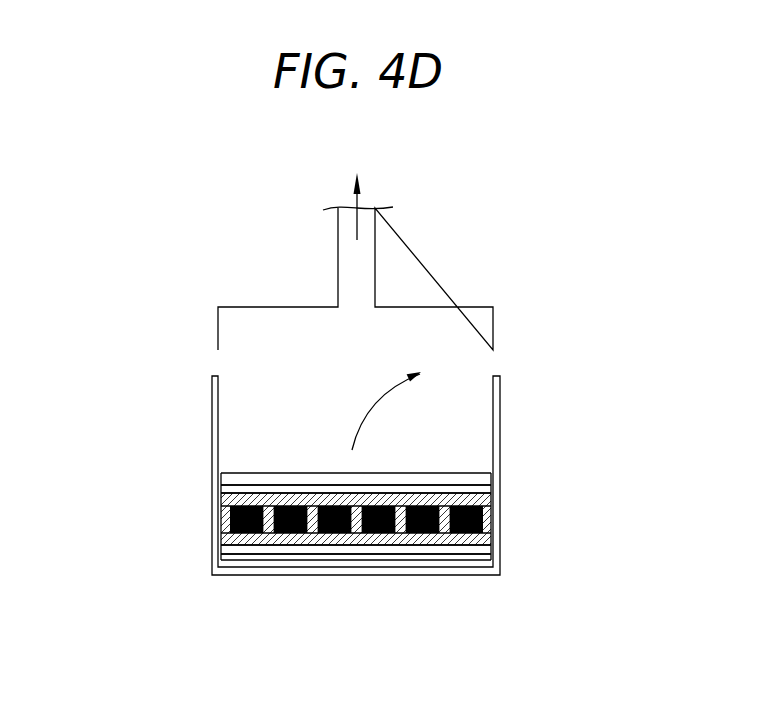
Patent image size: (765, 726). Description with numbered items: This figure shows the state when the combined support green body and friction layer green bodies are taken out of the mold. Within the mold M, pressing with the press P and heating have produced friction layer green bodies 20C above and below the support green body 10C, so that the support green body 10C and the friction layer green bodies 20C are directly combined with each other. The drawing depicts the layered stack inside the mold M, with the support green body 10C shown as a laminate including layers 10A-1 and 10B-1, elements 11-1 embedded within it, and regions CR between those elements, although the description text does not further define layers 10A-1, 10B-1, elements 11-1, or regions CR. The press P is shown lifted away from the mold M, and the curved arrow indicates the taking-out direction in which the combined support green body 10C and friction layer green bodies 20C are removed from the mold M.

The press P is at (263, 317).
The mold M is at (212, 394).
The friction layer green bodies 20C is at (277, 477).
The support green body 10C is at (301, 525).
The first layer 10A-1 is at (222, 487).
The second layer 10B-1 is at (222, 503).
The chip element 11-1 is at (357, 525).
The cutting region CR is at (468, 535).